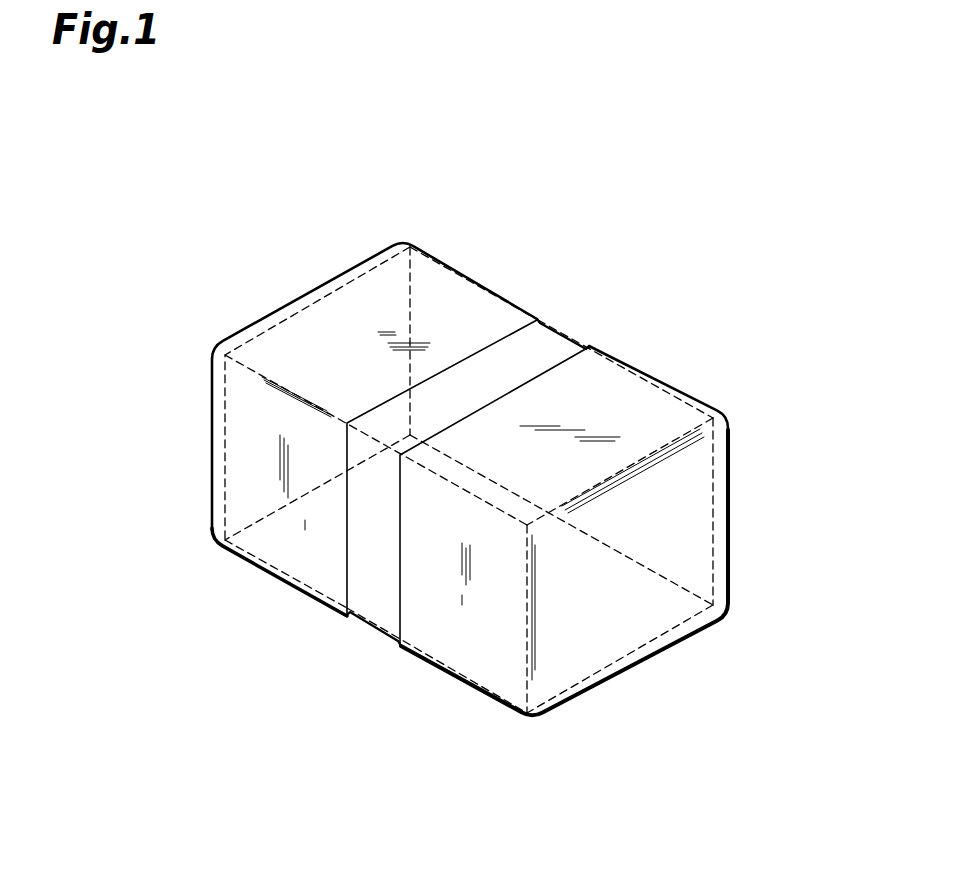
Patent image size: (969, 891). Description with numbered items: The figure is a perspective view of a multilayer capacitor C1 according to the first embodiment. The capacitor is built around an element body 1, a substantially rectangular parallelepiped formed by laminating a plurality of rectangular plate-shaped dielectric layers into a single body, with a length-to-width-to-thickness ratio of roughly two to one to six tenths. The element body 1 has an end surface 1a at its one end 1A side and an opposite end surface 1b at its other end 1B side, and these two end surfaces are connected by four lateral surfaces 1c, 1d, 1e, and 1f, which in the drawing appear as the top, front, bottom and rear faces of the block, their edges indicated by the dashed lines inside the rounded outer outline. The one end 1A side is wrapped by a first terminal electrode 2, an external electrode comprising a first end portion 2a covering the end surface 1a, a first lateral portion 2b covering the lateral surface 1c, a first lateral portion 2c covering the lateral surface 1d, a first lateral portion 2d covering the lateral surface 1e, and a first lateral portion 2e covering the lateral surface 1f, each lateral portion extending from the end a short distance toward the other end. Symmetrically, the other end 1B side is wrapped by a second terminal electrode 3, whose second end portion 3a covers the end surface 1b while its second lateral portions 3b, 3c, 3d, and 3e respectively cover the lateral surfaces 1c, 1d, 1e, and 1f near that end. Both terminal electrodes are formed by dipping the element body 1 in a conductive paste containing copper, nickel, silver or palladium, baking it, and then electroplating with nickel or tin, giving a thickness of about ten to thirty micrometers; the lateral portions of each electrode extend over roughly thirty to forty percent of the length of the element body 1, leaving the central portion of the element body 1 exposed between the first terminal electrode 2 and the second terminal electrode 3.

The multilayer capacitor C1 is at (733, 282).
The element body 1 is at (532, 351).
The one end 1A is at (293, 288).
The other end 1B is at (674, 478).
The end surface 1a is at (373, 317).
The end surface 1b is at (660, 518).
The lateral surface 1c is at (513, 366).
The lateral surface 1d is at (373, 603).
The lateral surface 1e is at (514, 668).
The lateral surface 1f is at (560, 383).
The first terminal electrode 2 is at (398, 299).
The first end portion 2a is at (210, 443).
The first lateral portion 2b is at (282, 355).
The first lateral portion 2c is at (303, 543).
The first lateral portion 2d is at (252, 571).
The first lateral portion 2e is at (477, 337).
The second terminal electrode 3 is at (658, 428).
The second end portion 3a is at (616, 603).
The second lateral portion 3b is at (575, 405).
The second lateral portion 3c is at (447, 633).
The second lateral portion 3d is at (558, 713).
The second lateral portion 3e is at (733, 537).